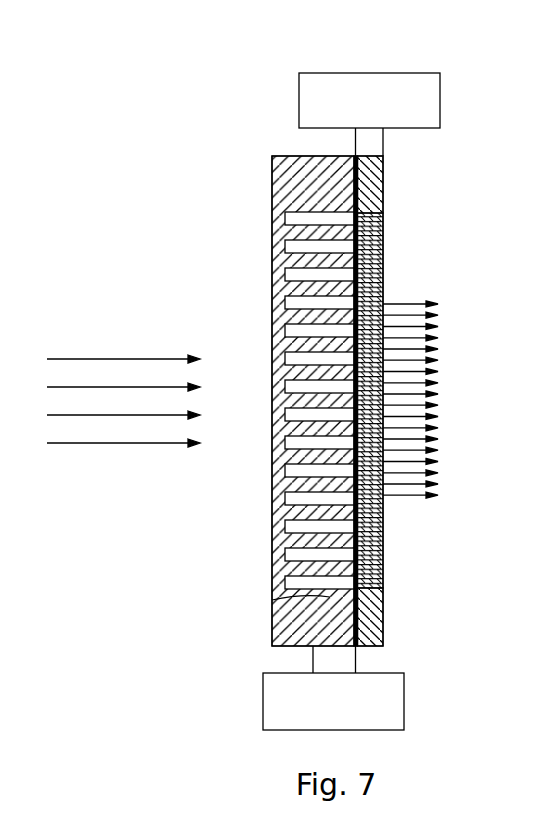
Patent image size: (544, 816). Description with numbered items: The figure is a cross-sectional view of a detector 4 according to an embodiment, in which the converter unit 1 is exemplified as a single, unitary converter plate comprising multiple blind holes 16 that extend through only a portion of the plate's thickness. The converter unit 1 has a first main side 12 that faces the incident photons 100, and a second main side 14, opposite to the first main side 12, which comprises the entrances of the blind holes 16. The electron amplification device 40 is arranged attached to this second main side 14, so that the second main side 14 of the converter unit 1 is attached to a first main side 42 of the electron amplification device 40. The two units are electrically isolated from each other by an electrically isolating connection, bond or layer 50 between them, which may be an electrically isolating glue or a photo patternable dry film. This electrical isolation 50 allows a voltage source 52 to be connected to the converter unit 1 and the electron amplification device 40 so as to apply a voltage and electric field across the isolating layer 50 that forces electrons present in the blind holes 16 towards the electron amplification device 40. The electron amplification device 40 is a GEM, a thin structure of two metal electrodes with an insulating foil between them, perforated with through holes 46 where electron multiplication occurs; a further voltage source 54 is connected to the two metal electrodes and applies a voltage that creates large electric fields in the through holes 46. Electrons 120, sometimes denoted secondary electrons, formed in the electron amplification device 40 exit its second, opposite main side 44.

The detector 4 is at (309, 376).
The converter unit 1 is at (330, 377).
The first main side 12 is at (272, 182).
The blind holes 16 is at (286, 246).
The second main side 44 is at (383, 181).
The electrically isolating connection 50 is at (380, 168).
The through holes 46 is at (408, 400).
The electron amplification device 40 is at (383, 544).
The second main side 14 is at (376, 616).
The first main side 42 is at (272, 600).
The voltage source 54 is at (368, 73).
The voltage source 52 is at (404, 698).
The incident photons 100 is at (115, 359).
The electrons 120 is at (418, 300).